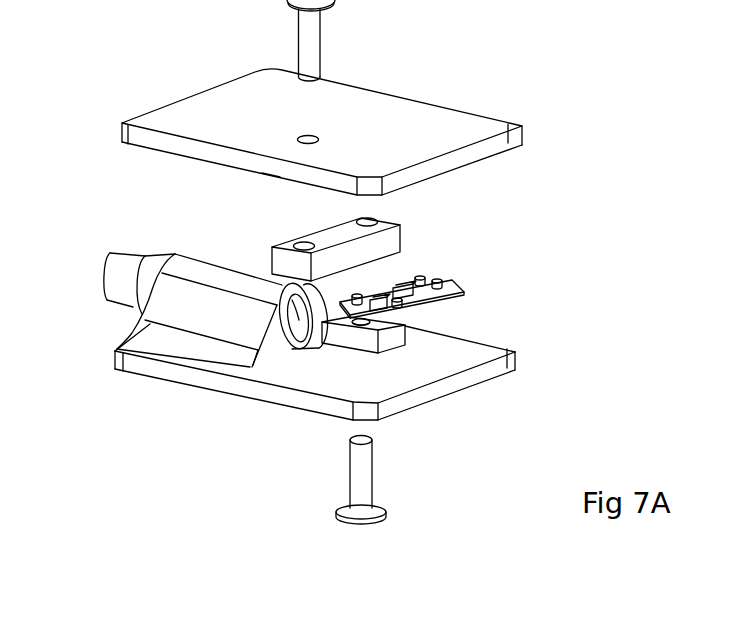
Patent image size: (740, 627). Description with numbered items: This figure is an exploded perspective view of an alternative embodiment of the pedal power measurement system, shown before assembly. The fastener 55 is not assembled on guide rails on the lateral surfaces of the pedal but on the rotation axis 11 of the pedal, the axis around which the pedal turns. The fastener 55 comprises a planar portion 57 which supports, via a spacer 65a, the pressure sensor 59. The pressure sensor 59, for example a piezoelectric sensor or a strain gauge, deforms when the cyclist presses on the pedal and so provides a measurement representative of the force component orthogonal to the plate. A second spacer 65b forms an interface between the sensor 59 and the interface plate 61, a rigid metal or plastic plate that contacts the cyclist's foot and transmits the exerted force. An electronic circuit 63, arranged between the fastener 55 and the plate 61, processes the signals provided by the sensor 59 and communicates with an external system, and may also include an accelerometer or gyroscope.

The interface plate 61 is at (196, 113).
The spacer 65b is at (273, 176).
The pressure sensor 59 is at (323, 237).
The electronic circuit 63 is at (438, 281).
The planar portion 57 is at (472, 357).
The fastener 55 is at (192, 343).
The rotation axis 11 is at (290, 313).
The spacer 65a is at (353, 338).